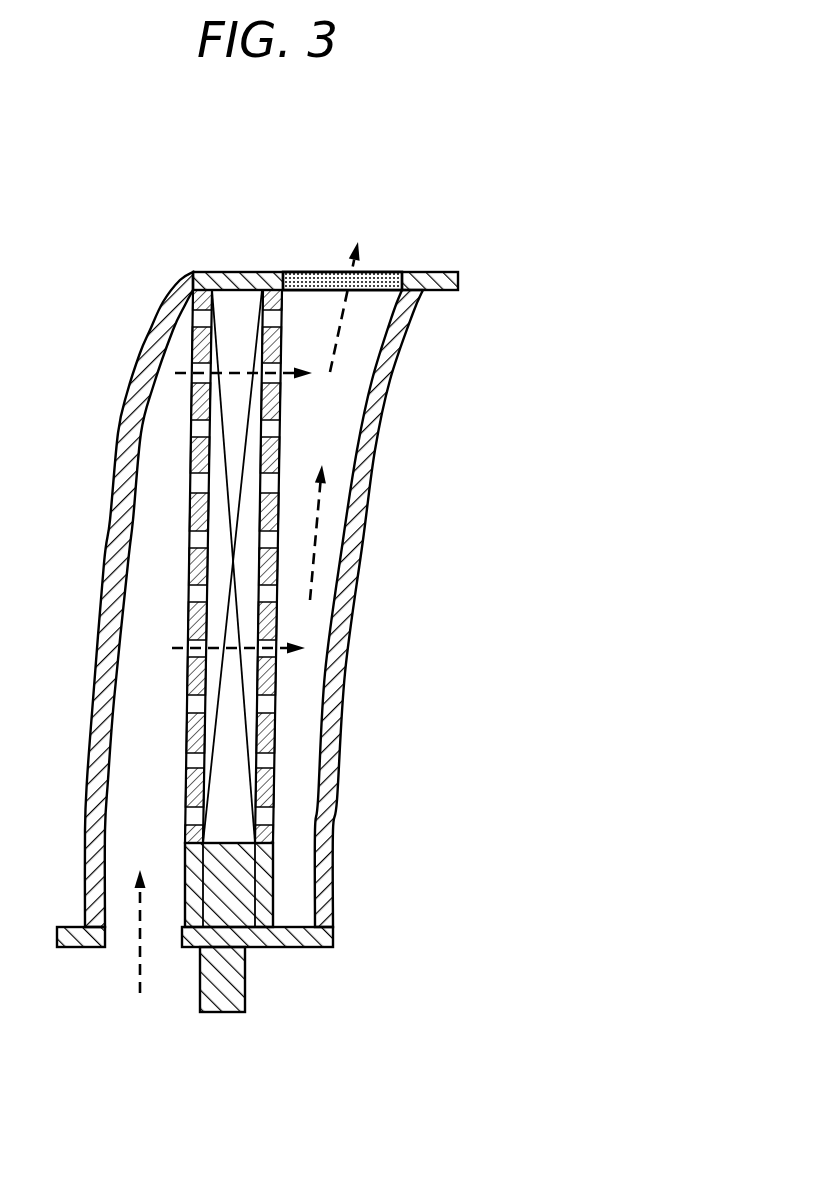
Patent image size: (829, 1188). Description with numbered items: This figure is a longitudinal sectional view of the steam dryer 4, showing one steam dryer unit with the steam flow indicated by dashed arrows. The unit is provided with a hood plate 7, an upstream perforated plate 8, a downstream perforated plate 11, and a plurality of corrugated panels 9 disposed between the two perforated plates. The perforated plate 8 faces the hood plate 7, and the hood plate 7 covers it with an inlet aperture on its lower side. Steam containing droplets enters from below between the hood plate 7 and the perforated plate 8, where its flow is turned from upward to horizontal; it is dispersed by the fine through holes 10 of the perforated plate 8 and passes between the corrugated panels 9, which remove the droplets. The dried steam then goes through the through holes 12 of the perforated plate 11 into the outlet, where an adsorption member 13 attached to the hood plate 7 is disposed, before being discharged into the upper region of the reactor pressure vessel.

The steam dryer 4 is at (390, 170).
The hood plate 7 is at (110, 567).
The perforated plate 8 is at (193, 350).
The corrugated panels 9 is at (233, 312).
The through holes 10 is at (187, 705).
The perforated plate 11 is at (275, 682).
The through holes 12 is at (279, 318).
The adsorption member 13 is at (390, 272).